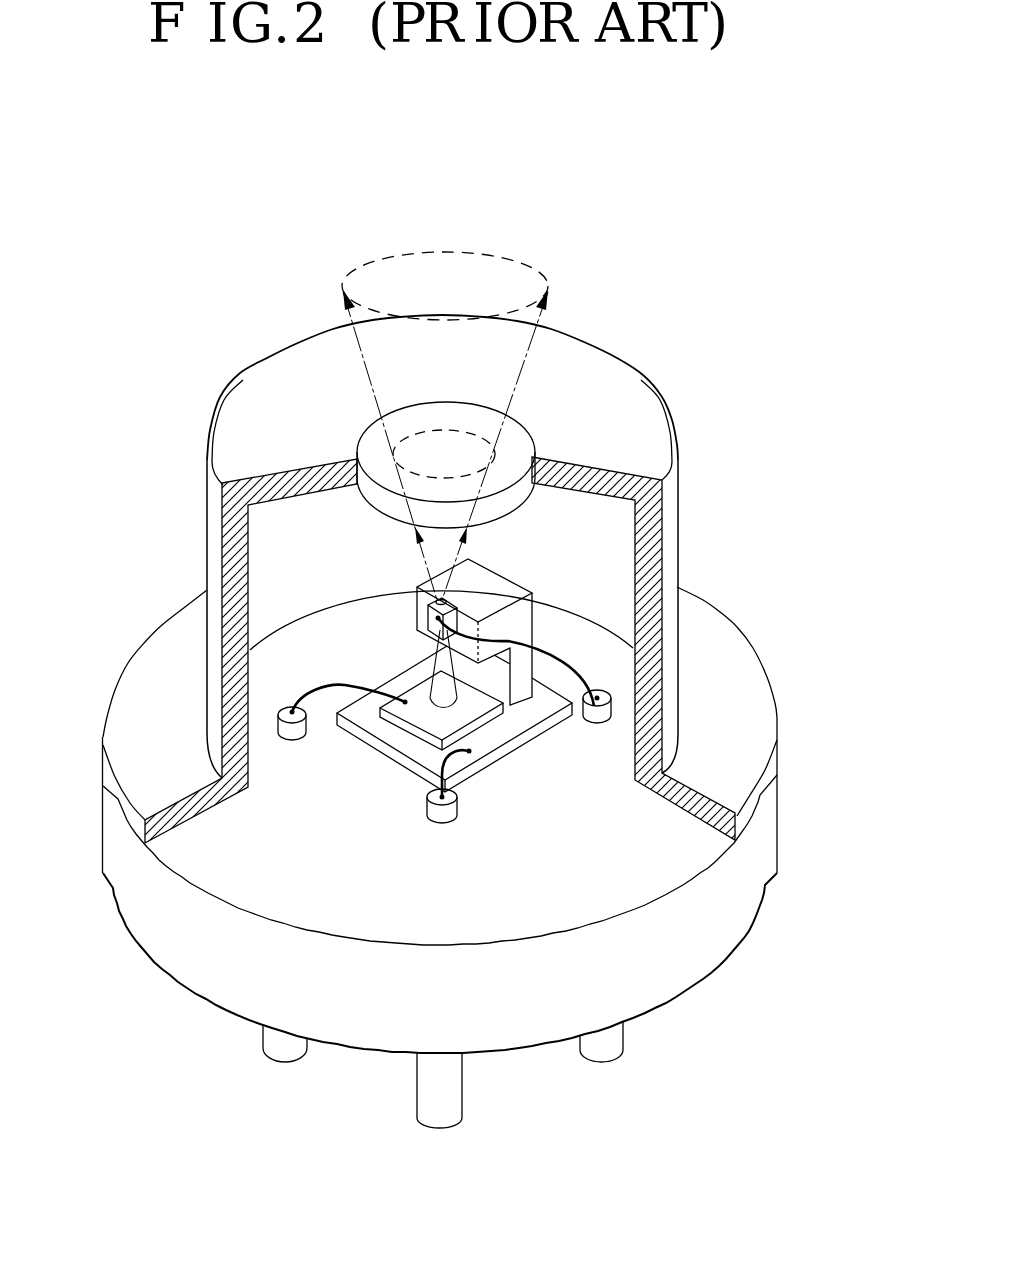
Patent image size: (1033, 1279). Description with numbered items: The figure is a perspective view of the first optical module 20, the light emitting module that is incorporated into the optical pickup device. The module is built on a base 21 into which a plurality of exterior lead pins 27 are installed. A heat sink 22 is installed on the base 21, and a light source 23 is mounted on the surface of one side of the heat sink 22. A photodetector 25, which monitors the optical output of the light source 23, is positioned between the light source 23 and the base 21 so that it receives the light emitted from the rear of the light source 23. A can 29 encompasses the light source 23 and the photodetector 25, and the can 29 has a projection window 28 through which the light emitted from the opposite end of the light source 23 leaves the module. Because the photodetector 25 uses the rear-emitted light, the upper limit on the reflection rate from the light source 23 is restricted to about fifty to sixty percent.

The first optical module 20 is at (166, 445).
The base 21 is at (760, 848).
The heat sink 22 is at (518, 633).
The light source 23 is at (426, 611).
The photodetector 25 is at (407, 725).
The exterior lead pins 27 is at (610, 1042).
The projection window 28 is at (512, 443).
The can 29 is at (625, 427).